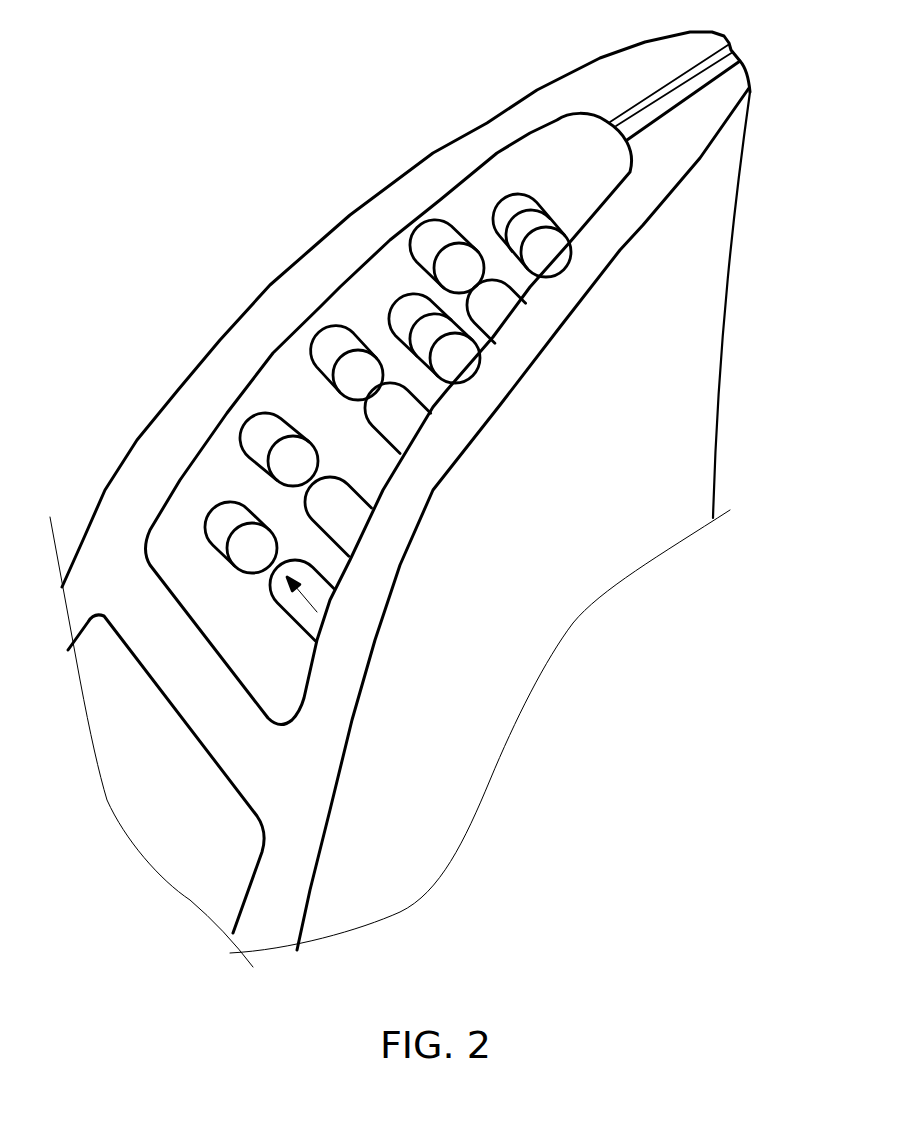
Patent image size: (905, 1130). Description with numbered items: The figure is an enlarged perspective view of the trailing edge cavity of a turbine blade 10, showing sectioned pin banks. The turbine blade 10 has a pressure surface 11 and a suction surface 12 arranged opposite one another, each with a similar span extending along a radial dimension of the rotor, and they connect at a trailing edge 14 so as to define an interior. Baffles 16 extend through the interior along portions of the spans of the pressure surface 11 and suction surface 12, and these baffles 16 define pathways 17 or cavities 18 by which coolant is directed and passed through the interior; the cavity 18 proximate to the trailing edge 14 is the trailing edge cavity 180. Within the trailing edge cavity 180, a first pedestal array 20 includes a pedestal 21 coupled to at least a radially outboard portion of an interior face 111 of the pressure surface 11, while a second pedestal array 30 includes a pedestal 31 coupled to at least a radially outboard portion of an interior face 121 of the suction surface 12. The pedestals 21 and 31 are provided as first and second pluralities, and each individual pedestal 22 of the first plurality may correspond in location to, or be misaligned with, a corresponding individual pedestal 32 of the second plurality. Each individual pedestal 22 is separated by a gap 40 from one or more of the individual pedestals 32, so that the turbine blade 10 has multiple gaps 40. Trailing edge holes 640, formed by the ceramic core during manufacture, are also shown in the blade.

The turbine blade 10 is at (434, 153).
The pressure surface 11 is at (507, 373).
The interior face of the pressure surface 111 is at (383, 464).
The suction surface 12 is at (232, 353).
The interior face of the suction surface 121 is at (561, 104).
The trailing edge 14 is at (709, 117).
The baffles 16 is at (257, 775).
The pathways 17 is at (192, 785).
The cavity 18 is at (293, 442).
The trailing edge cavity 180 is at (346, 425).
The first pedestal array 20 is at (398, 420).
The pedestal of the first pedestal array 21 is at (343, 523).
The individual pedestal of the first plurality 22 is at (507, 308).
The second pedestal array 30 is at (320, 326).
The pedestal of the second pedestal array 31 is at (253, 437).
The individual pedestal of the second plurality 32 is at (440, 230).
The gap 40 is at (243, 530).
The trailing edge holes 640 is at (735, 48).